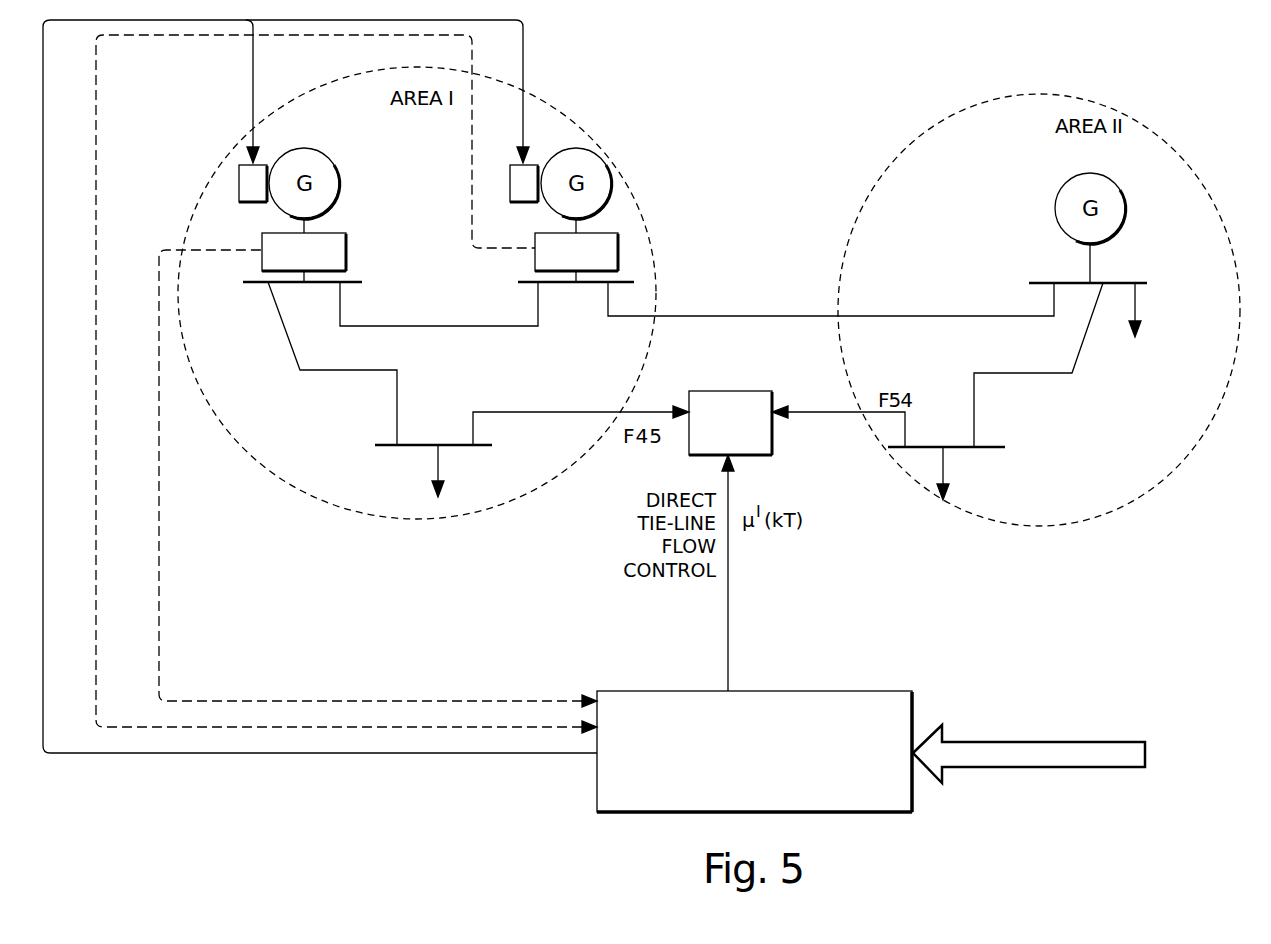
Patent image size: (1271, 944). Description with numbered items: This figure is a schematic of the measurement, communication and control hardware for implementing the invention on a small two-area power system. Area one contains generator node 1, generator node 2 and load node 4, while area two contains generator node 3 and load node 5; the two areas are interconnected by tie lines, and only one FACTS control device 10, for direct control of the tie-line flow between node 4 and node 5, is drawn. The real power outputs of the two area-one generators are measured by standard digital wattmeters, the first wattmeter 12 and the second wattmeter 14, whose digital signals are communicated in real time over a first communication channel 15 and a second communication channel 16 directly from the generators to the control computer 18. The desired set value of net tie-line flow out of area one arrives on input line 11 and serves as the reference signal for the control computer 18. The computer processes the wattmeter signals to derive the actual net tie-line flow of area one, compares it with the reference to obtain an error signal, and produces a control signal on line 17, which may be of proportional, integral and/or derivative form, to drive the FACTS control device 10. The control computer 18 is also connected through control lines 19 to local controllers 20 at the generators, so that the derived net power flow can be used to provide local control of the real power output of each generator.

The node 1 is at (268, 283).
The node 2 is at (520, 282).
The node 3 is at (1040, 283).
The node 4 is at (385, 445).
The node 5 is at (965, 447).
The FACTS control device 10 is at (772, 430).
The input line 11 is at (1090, 742).
The wattmeter WM1 12 is at (346, 240).
The wattmeter WM2 14 is at (535, 238).
The communication channel CM1 15 is at (96, 572).
The communication channel CM2 16 is at (159, 608).
The control signal line 17 is at (728, 580).
The control computer 18 is at (658, 691).
The control lines 19 is at (278, 751).
The local controllers 20 is at (267, 163).